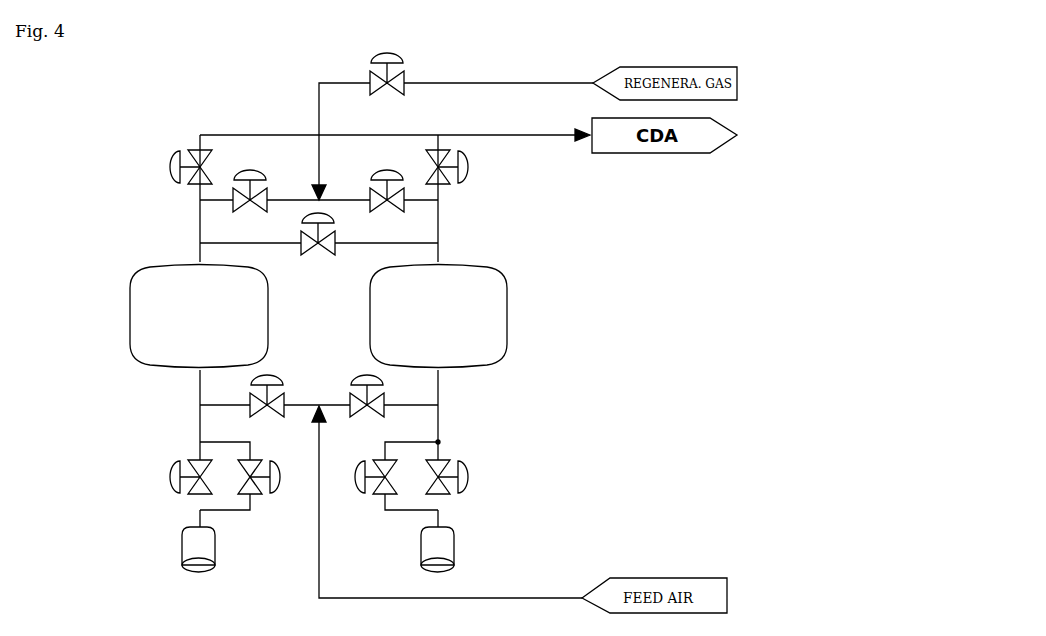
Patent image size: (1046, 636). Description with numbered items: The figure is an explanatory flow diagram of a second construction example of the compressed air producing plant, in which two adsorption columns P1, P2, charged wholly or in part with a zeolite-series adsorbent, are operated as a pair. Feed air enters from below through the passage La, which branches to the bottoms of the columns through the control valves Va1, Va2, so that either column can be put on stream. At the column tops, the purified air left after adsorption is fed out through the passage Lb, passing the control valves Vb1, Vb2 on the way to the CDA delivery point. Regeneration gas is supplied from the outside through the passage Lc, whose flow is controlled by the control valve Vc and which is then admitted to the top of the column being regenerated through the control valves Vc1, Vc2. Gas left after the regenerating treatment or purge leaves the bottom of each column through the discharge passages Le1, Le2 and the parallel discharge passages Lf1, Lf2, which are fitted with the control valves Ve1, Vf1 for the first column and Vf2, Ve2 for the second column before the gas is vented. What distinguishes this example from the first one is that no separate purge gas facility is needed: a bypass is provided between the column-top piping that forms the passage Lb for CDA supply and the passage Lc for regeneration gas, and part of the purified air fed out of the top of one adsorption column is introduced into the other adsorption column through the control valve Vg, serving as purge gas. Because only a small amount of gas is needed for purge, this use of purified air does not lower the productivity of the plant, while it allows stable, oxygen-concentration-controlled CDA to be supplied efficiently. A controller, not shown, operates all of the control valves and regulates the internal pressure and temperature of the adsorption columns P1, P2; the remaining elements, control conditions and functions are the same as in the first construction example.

The control valve Vc is at (396, 78).
The passage for introducing regeneration gas Lc is at (452, 133).
The passage for feeding out purified air Lb is at (395, 129).
The control valve Vb1 is at (191, 183).
The control valve Vb2 is at (446, 183).
The control valve Vc1 is at (235, 211).
The control valve Vc2 is at (372, 211).
The control valve Vg is at (303, 255).
The adsorption column P1 is at (199, 316).
The adsorption column P2 is at (438, 316).
The discharge passage Le1 is at (180, 415).
The discharge passage Le2 is at (452, 415).
The control valve Va1 is at (252, 416).
The control valve Va2 is at (349, 416).
The passage for introducing feed air La is at (447, 502).
The control valve Ve1 is at (191, 493).
The control valve Vf1 is at (258, 493).
The discharge passage Lf1 is at (225, 487).
The control valve Vf2 is at (376, 493).
The discharge passage Lf2 is at (412, 486).
The control valve Ve2 is at (446, 493).